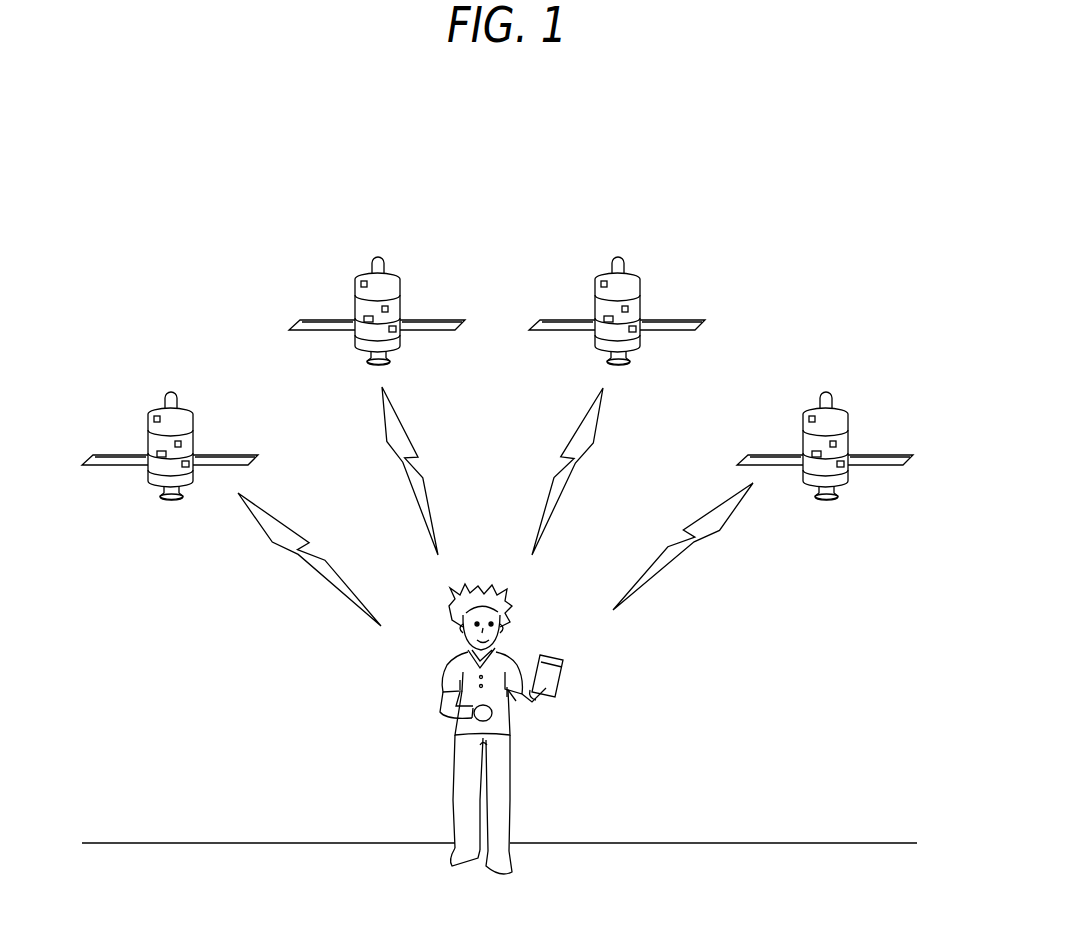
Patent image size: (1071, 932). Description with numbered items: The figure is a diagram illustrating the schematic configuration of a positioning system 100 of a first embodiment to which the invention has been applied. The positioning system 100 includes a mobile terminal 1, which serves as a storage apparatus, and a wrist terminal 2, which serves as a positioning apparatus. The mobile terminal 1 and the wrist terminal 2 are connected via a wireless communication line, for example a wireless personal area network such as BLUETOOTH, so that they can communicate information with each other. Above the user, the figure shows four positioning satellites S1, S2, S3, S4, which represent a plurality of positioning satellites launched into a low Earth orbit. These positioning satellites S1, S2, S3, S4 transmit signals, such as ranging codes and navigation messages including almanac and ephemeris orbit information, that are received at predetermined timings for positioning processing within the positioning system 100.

The positioning satellite S1 is at (171, 392).
The positioning satellite S2 is at (380, 256).
The positioning satellite S3 is at (622, 256).
The positioning satellite S4 is at (831, 392).
The mobile terminal 1 is at (564, 674).
The wrist terminal 2 is at (457, 723).
The positioning system 100 is at (719, 636).